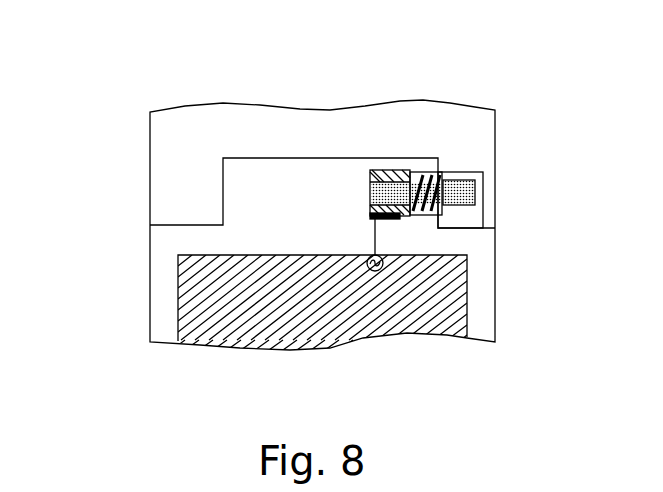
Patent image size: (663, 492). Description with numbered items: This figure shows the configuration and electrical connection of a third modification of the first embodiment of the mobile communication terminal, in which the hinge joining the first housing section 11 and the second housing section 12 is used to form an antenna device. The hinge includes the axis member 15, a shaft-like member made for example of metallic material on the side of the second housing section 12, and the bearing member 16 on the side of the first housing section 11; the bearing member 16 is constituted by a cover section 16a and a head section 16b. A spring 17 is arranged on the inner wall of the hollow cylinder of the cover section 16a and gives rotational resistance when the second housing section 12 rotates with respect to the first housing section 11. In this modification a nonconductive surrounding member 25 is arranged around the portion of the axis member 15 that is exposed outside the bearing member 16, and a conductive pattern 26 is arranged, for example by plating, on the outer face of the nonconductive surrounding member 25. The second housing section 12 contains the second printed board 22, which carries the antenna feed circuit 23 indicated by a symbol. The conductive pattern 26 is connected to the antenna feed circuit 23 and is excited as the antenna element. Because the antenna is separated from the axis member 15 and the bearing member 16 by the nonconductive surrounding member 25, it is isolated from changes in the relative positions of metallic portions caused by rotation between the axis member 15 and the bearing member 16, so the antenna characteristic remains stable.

The first housing section 11 is at (150, 160).
The second housing section 12 is at (150, 262).
The second printed board 22 is at (178, 302).
The nonconductive surrounding member 25 is at (370, 205).
The conductive pattern 26 is at (382, 213).
The antenna feed circuit 23 is at (375, 271).
The bearing member 16 is at (512, 119).
The cover section 16a is at (442, 172).
The head section 16b is at (463, 172).
The axis member 15 is at (475, 193).
The spring 17 is at (413, 172).